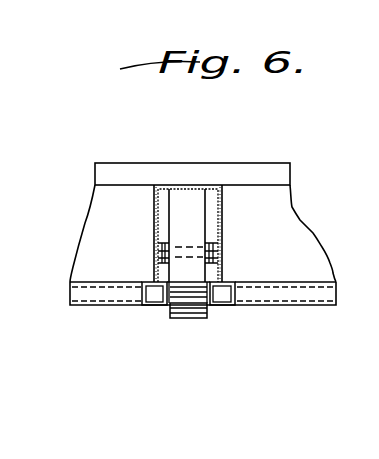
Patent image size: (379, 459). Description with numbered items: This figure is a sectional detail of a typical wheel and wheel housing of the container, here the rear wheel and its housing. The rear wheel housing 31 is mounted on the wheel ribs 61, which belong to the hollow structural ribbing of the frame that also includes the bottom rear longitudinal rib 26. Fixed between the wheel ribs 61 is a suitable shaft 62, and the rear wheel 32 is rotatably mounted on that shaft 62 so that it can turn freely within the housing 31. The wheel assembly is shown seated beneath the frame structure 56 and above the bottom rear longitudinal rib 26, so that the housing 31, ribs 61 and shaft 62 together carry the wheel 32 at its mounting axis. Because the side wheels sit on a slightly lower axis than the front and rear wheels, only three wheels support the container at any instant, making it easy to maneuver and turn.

The support bar 56 is at (253, 153).
The bottom rear longitudinal rib 26 is at (117, 298).
The wheel ribs 61 is at (155, 307).
The rear wheel housing 31 is at (225, 217).
The rear wheel 32 is at (177, 217).
The shaft 62 is at (222, 252).